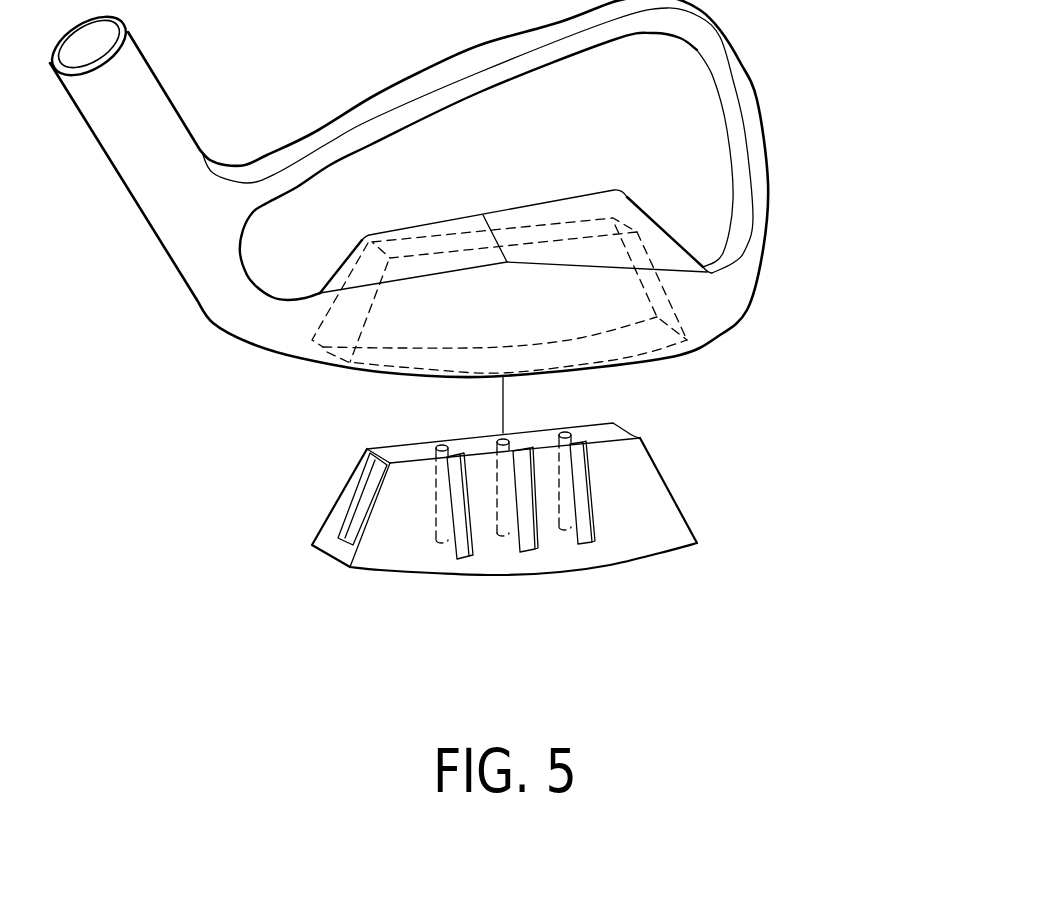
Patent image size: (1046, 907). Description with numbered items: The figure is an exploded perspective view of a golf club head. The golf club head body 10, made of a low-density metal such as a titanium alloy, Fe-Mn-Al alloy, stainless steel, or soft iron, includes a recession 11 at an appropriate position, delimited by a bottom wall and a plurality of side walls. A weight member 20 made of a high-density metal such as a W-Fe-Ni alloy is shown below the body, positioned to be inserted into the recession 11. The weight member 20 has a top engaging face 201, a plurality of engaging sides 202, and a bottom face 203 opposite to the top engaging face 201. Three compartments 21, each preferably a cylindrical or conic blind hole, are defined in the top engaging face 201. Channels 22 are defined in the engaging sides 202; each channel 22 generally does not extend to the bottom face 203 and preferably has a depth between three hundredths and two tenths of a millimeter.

The golf club head body 10 is at (747, 112).
The recession 11 is at (687, 357).
The weight member 20 is at (531, 538).
The compartment 21 is at (573, 427).
The channel 22 is at (582, 488).
The top engaging face 201 is at (407, 450).
The engaging sides 202 is at (407, 567).
The bottom face 203 is at (323, 555).